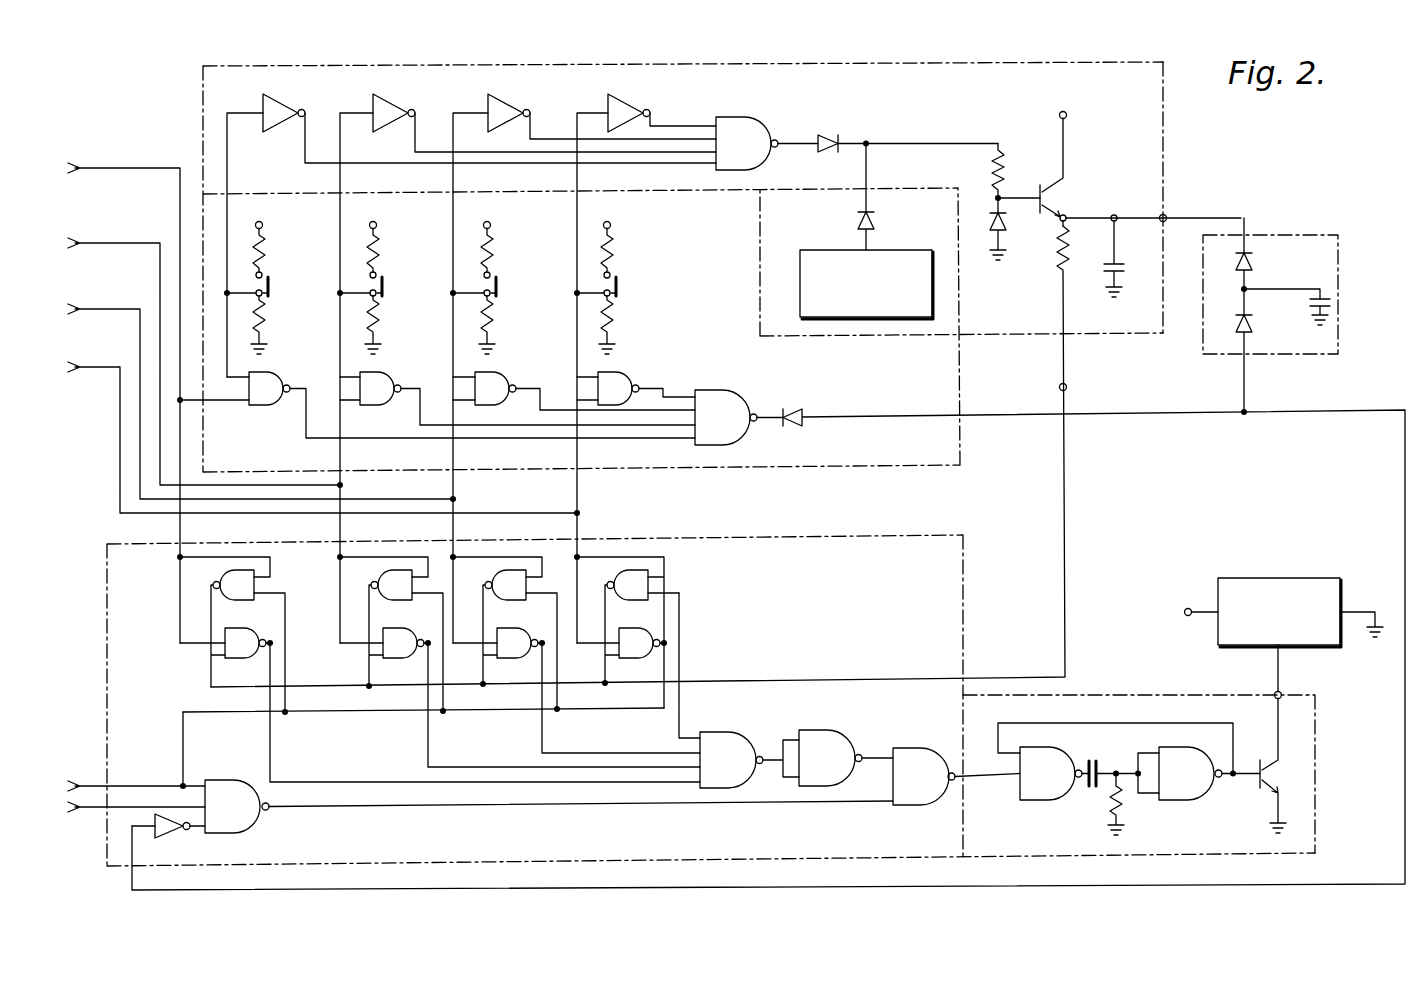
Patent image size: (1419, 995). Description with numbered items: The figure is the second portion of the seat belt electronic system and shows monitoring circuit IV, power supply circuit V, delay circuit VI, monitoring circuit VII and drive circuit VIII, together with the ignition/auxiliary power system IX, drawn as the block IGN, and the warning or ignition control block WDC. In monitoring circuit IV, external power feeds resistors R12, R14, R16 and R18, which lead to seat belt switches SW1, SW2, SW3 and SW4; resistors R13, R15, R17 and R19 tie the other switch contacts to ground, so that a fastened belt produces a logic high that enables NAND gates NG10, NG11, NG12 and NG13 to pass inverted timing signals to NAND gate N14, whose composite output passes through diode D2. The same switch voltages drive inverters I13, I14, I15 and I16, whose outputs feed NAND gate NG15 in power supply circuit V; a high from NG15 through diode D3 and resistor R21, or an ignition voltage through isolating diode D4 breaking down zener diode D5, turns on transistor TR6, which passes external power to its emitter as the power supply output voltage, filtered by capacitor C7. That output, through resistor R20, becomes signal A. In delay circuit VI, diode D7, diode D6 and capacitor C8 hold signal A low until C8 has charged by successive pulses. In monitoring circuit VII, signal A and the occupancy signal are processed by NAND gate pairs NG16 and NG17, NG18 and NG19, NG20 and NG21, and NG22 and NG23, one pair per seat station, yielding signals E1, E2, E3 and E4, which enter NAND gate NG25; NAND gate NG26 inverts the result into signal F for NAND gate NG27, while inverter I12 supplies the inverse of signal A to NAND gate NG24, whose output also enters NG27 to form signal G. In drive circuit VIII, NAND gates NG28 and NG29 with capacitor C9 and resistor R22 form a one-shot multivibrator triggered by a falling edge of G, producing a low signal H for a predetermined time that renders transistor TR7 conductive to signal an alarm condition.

The inverter I12 is at (170, 840).
The inverter I13 is at (290, 104).
The inverter I14 is at (398, 104).
The inverter I15 is at (518, 104).
The inverter I16 is at (638, 104).
The NAND gate NG10 is at (280, 376).
The NAND gate NG11 is at (392, 376).
The NAND gate NG12 is at (508, 376).
The NAND gate NG13 is at (630, 376).
The NAND gate N14 is at (722, 392).
The NAND gate NG15 is at (760, 120).
The NAND gate NG16 is at (236, 576).
The NAND gate NG17 is at (232, 660).
The NAND gate NG18 is at (394, 576).
The NAND gate NG19 is at (390, 660).
The NAND gate NG20 is at (508, 576).
The NAND gate NG21 is at (504, 660).
The NAND gate NG22 is at (630, 576).
The NAND gate NG23 is at (626, 660).
The NAND gate NG24 is at (232, 778).
The NAND gate NG25 is at (740, 736).
The NAND gate NG26 is at (838, 732).
The NAND gate NG27 is at (926, 746).
The NAND gate NG28 is at (1056, 794).
The NAND gate NG29 is at (1194, 794).
The diode D2 is at (793, 406).
The diode D3 is at (836, 130).
The isolating diode D4 is at (858, 224).
The zener diode D5 is at (1006, 224).
The diode D6 is at (1254, 322).
The diode D7 is at (1250, 262).
The resistor R12 is at (266, 250).
The resistor R13 is at (268, 318).
The resistor R14 is at (380, 250).
The resistor R15 is at (382, 318).
The resistor R16 is at (494, 250).
The resistor R17 is at (496, 318).
The resistor R18 is at (614, 250).
The resistor R19 is at (616, 318).
The resistor R20 is at (1058, 270).
The resistor R21 is at (992, 152).
The resistor R22 is at (1124, 804).
The switch SW1 is at (275, 277).
The switch SW2 is at (389, 277).
The switch SW3 is at (503, 277).
The switch SW4 is at (623, 277).
The transistor TR6 is at (1062, 188).
The transistor TR7 is at (1270, 760).
The filter capacitor C7 is at (1122, 266).
The capacitor C8 is at (1320, 288).
The capacitor C9 is at (1094, 760).
The processor circuitry signal E1 is at (342, 782).
The processor circuitry signal E2 is at (492, 766).
The processor circuitry signal E3 is at (612, 754).
The processor circuitry signal E4 is at (692, 738).
The signal F is at (872, 762).
The signal G is at (978, 776).
The signal H is at (1244, 774).
The signal A is at (1068, 390).
The monitoring circuit IV is at (832, 470).
The power supply circuit V is at (1130, 334).
The delay circuit VI is at (1286, 235).
The monitoring circuit VII is at (903, 534).
The drive circuit VIII is at (1103, 690).
The ignition/auxiliary power system IX is at (760, 255).
The ignition/aux power circuit block IGN is at (866, 284).
The warning disabling circuit block WDC is at (1270, 612).